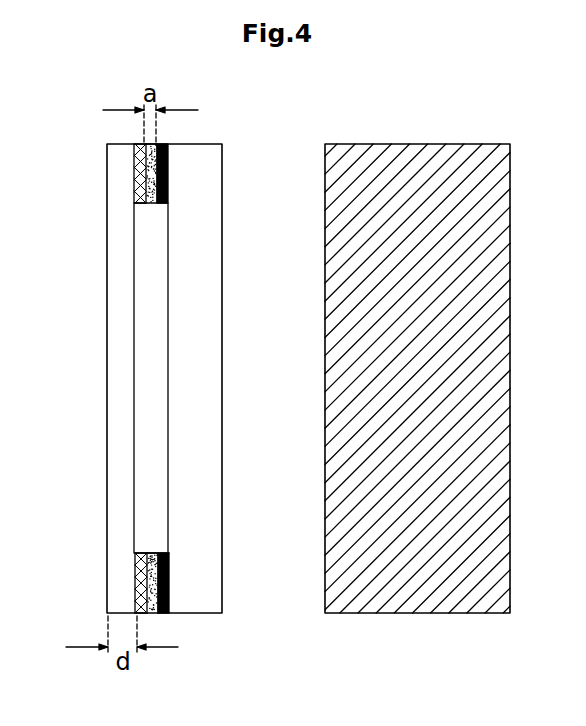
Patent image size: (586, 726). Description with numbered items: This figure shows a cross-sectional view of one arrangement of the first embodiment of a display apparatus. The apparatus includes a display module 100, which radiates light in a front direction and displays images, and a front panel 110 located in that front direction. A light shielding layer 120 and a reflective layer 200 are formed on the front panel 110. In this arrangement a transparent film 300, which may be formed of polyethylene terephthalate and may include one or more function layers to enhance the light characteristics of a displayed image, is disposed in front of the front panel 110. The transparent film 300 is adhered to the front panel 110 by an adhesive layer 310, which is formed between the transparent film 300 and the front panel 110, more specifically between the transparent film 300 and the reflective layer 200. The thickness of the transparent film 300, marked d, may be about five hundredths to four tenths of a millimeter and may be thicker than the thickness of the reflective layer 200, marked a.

The display module 100 is at (418, 153).
The front panel 110 is at (200, 613).
The light shielding layer 120 is at (167, 167).
The reflective layer 200 is at (134, 190).
The transparent film 300 is at (118, 543).
The adhesive layer 310 is at (134, 157).